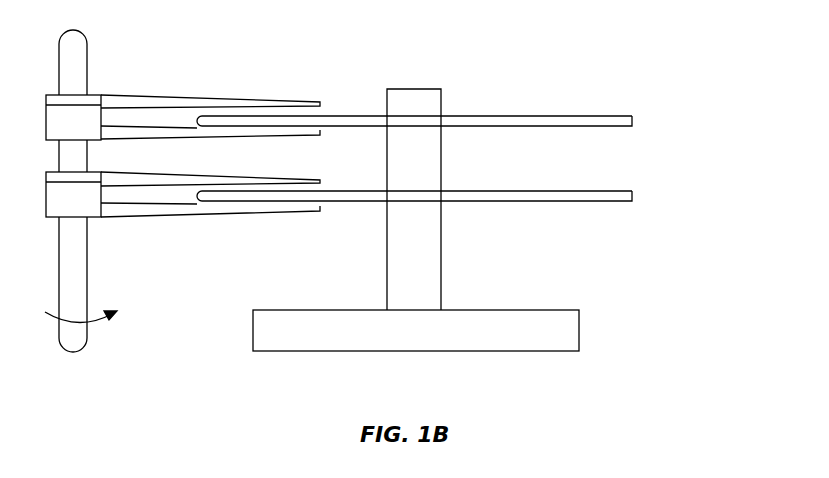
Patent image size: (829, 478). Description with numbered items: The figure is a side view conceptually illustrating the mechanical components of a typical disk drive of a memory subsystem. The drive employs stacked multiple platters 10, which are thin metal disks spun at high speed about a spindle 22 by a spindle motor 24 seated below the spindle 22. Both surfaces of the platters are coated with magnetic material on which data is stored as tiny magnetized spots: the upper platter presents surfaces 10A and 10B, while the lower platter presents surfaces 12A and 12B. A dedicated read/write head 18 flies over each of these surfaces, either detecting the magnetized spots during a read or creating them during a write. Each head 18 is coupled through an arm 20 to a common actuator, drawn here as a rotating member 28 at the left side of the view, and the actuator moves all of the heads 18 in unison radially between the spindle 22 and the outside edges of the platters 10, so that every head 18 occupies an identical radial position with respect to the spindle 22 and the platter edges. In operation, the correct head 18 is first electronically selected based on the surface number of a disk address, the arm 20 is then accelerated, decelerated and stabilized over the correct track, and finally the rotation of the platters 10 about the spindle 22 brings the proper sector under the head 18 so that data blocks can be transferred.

The platter 10 is at (455, 109).
The platter surface 10A is at (600, 115).
The platter surface 10B is at (600, 127).
The platter surface 12A is at (600, 190).
The platter surface 12B is at (600, 202).
The read/write head 18 is at (247, 215).
The arm 20 is at (268, 178).
The spindle 22 is at (442, 260).
The spindle motor 24 is at (579, 322).
The rotating shaft 28 is at (88, 295).